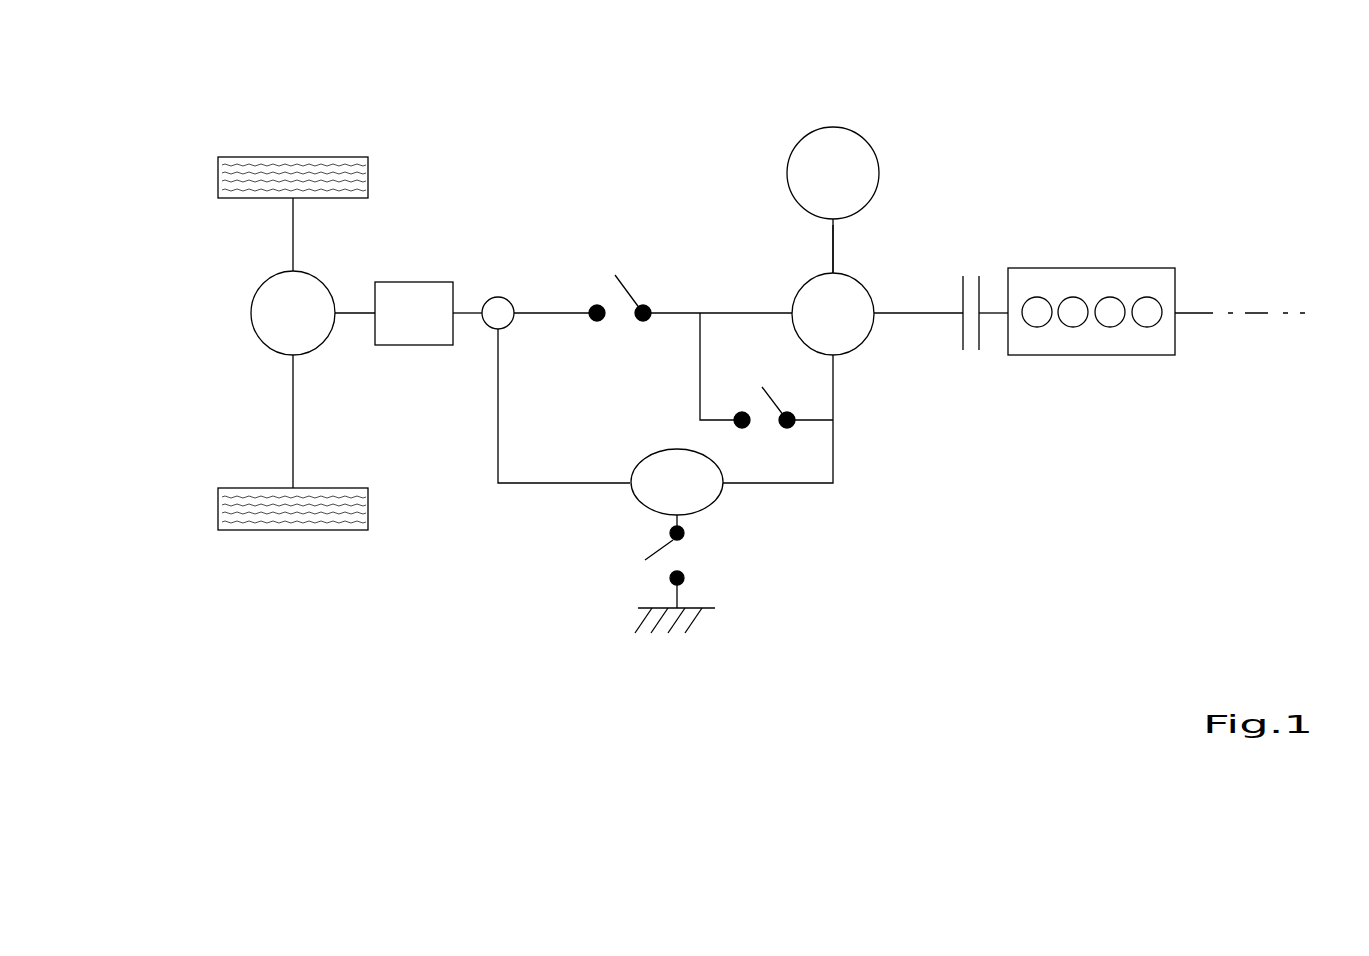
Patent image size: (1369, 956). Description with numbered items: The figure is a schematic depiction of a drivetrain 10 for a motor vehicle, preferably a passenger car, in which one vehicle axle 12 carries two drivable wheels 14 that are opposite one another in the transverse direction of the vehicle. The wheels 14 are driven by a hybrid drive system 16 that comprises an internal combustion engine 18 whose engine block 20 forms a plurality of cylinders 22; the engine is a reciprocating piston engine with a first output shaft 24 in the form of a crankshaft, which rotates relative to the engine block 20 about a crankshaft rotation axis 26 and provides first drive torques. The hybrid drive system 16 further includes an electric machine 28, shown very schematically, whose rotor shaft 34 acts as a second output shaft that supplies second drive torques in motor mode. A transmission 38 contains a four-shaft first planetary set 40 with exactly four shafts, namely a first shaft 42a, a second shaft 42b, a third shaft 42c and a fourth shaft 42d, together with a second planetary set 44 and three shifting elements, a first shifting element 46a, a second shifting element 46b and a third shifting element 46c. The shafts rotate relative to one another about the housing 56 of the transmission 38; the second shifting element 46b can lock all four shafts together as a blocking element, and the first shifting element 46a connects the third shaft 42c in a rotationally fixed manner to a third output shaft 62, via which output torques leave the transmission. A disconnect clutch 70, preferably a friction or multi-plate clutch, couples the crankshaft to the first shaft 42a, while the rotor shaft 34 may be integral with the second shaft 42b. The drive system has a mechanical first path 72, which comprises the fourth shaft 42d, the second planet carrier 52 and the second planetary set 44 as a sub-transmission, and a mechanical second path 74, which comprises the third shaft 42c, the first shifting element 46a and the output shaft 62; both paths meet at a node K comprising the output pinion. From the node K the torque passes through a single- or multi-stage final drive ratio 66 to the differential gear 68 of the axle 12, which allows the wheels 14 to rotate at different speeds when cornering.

The drivetrain 10 is at (215, 537).
The axle 12 is at (345, 145).
The wheels 14 is at (272, 175).
The hybrid drive system 16 is at (1177, 358).
The internal combustion engine 18 is at (1150, 275).
The engine block 20 is at (1087, 343).
The cylinders 22 is at (1163, 297).
The first output shaft 24 is at (1000, 318).
The crankshaft rotation axis 26 is at (1262, 308).
The electric machine 28 is at (883, 163).
The rotor shaft 34 is at (833, 240).
The transmission 38 is at (760, 120).
The first planetary set 40 is at (848, 345).
The first shaft 42a is at (925, 313).
The second shaft 42b is at (833, 258).
The third shaft 42c is at (708, 303).
The fourth shaft 42d is at (835, 457).
The second planetary set 44 is at (695, 500).
The first shifting element 46a is at (627, 283).
The second shifting element 46b is at (762, 405).
The third shifting element 46c is at (658, 548).
The second planet carrier 52 is at (533, 488).
The housing 56 is at (695, 622).
The third output shaft 62 is at (567, 318).
The final drive ratio 66 is at (415, 290).
The differential gear 68 is at (267, 315).
The disconnect clutch 70 is at (960, 352).
The first path 72 is at (840, 488).
The second path 74 is at (618, 262).
The node K is at (498, 297).